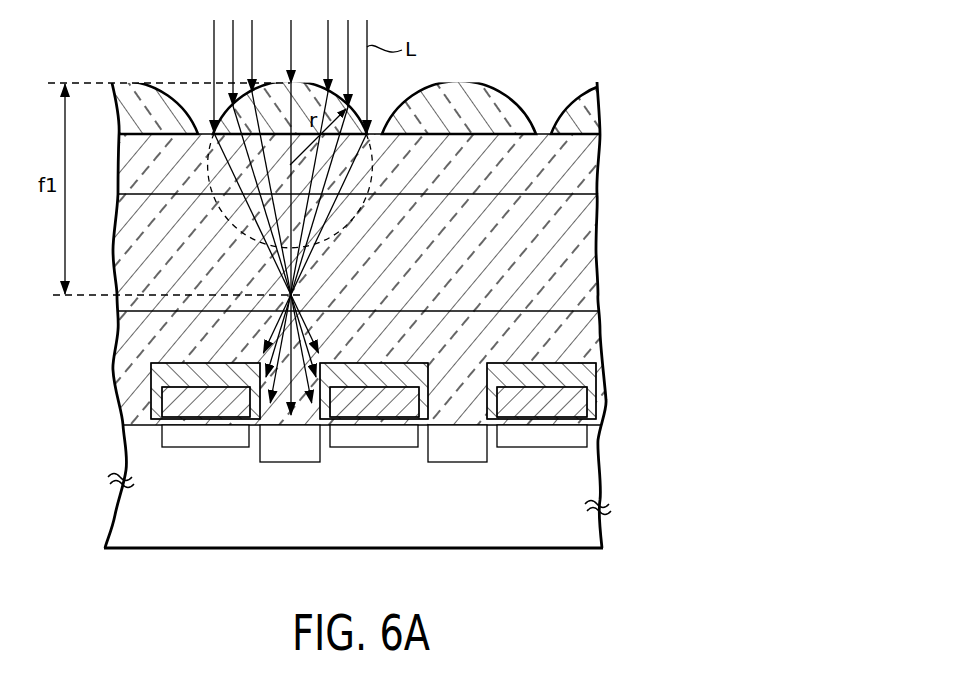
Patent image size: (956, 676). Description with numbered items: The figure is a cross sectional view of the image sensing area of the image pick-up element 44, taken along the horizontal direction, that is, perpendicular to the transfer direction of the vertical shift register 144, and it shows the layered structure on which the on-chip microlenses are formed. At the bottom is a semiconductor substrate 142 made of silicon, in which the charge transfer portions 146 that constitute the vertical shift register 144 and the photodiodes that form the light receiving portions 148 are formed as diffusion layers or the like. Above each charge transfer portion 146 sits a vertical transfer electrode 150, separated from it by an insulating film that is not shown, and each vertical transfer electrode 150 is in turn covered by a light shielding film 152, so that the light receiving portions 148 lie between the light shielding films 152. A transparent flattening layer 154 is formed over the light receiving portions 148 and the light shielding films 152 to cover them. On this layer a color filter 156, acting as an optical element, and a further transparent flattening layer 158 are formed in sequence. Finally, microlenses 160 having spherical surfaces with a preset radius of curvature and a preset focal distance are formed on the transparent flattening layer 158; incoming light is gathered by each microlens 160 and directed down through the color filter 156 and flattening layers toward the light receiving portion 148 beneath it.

The image pick-up element 44 is at (506, 608).
The semiconductor substrate 142 is at (588, 537).
The vertical shift register 144 is at (727, 398).
The charge transfer portion 146 is at (207, 442).
The light receiving portion 148 is at (287, 463).
The vertical transfer electrode 150 is at (578, 398).
The light shielding film 152 is at (596, 371).
The transparent flattening layer 154 is at (588, 332).
The color filter 156 is at (582, 245).
The transparent flattening layer 158 is at (580, 162).
The microlens 160 is at (503, 92).